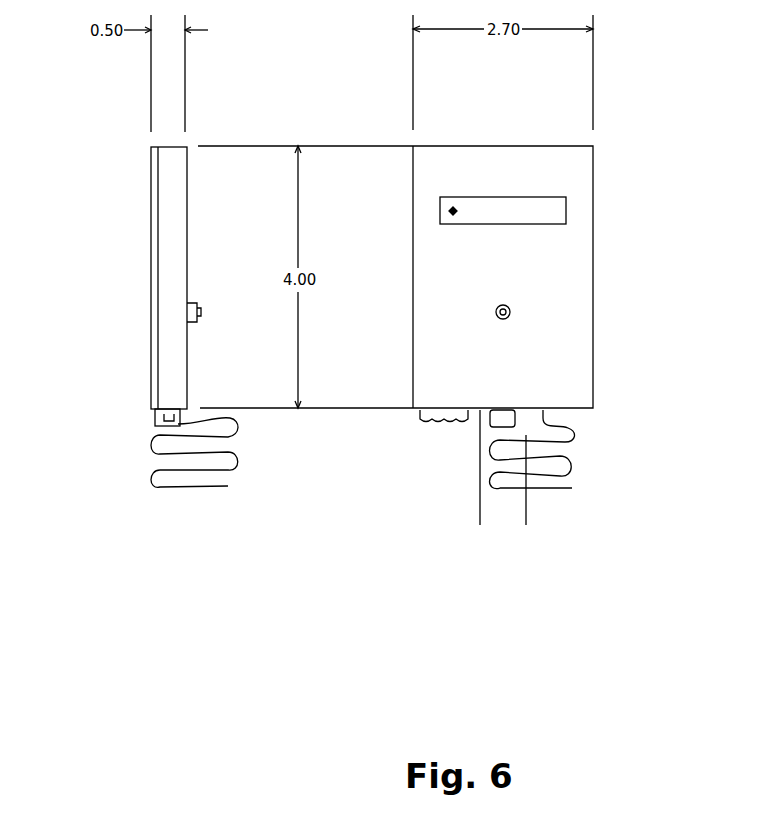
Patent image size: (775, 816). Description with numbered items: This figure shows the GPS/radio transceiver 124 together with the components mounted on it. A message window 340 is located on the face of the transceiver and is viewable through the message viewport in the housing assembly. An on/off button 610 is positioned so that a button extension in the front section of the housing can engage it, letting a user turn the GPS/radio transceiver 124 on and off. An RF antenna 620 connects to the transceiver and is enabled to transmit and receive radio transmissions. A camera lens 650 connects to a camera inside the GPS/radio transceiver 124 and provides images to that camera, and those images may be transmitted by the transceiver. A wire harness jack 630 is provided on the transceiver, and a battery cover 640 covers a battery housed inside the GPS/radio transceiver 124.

The GPS/radio transceiver 124 is at (411, 162).
The message window 340 is at (566, 197).
The on/off button 610 is at (510, 307).
The RF antenna 620 is at (232, 450).
The wire harness jack 630 is at (418, 420).
The battery cover 640 is at (153, 367).
The camera lens 650 is at (490, 428).